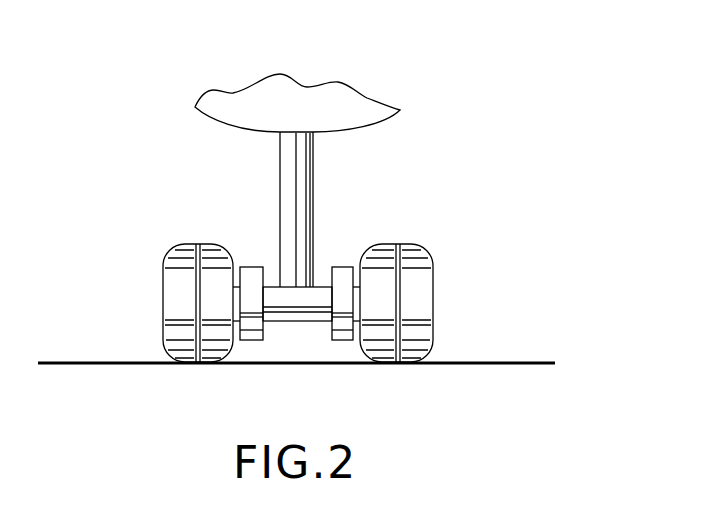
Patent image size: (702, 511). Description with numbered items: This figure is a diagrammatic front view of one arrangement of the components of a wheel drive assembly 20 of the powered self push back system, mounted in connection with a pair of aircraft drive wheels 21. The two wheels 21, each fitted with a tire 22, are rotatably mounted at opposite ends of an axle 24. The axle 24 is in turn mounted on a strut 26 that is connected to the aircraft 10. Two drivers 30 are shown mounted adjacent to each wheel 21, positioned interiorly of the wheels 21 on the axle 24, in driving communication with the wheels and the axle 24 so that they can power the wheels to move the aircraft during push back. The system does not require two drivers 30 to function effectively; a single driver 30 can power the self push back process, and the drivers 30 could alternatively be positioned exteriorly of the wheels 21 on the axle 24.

The aircraft 10 is at (313, 122).
The wheel drive assembly 20 is at (190, 178).
The wheel 21 is at (170, 238).
The tire 22 is at (177, 325).
The axle 24 is at (293, 298).
The strut 26 is at (300, 195).
The driver 30 is at (253, 333).